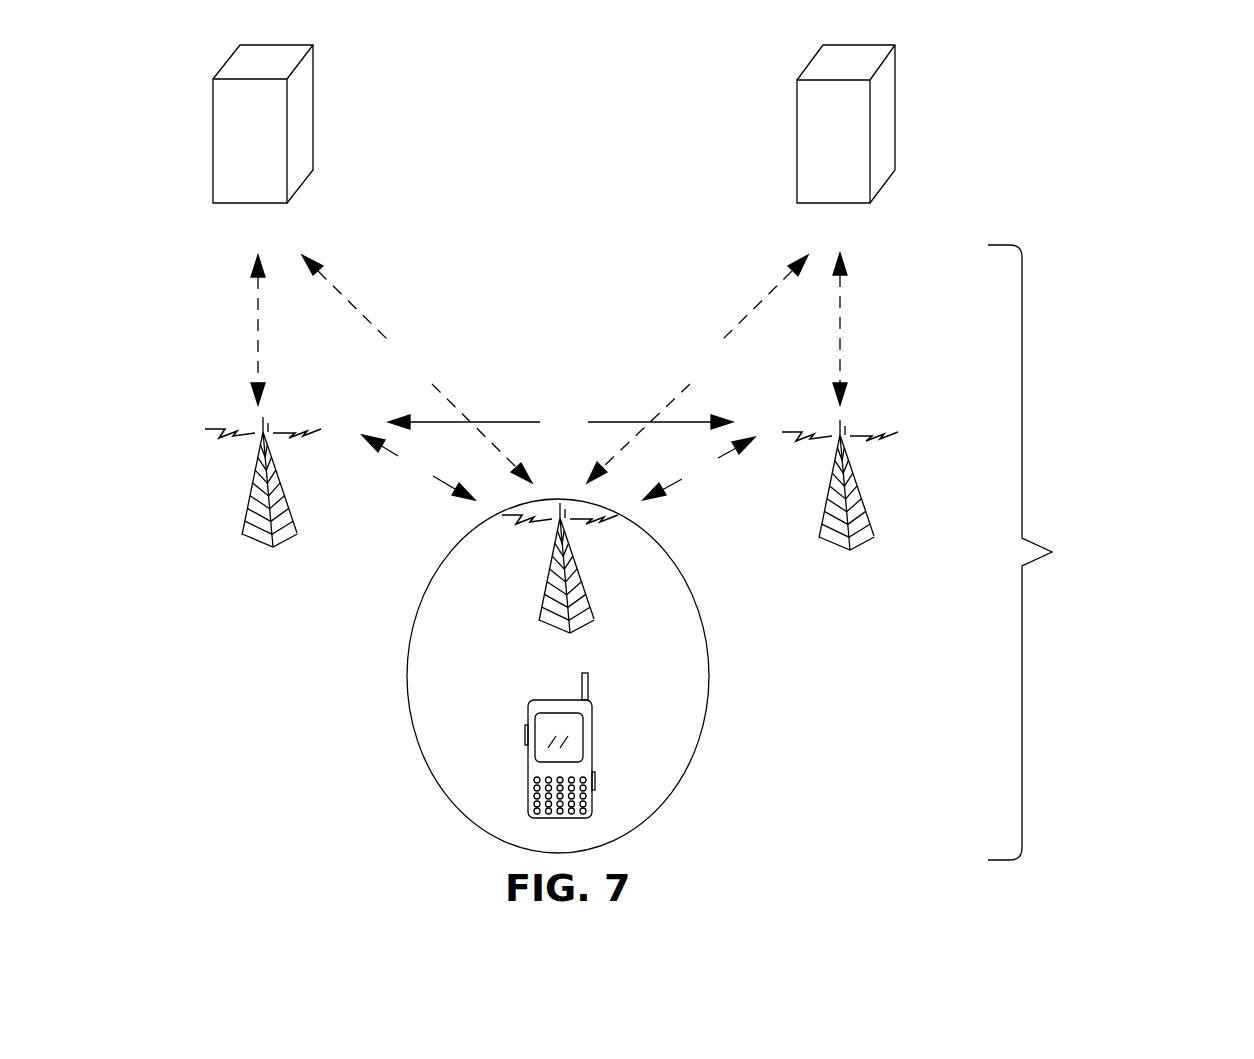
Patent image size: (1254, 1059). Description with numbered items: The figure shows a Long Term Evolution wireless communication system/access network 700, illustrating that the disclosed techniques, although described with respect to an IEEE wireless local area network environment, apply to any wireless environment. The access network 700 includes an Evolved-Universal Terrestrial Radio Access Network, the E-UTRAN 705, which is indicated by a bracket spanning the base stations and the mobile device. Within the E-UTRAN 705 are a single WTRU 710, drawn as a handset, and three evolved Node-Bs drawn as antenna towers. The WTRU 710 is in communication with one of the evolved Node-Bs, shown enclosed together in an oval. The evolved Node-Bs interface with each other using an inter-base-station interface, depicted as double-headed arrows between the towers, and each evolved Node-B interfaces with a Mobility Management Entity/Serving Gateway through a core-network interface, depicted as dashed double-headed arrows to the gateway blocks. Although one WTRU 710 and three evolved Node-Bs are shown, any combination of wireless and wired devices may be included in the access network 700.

The wireless communication system/access network 700 is at (1095, 52).
The Evolved-Universal Terrestrial Radio Access Network (E-UTRAN) 705 is at (670, 552).
The WTRU 710 is at (592, 802).